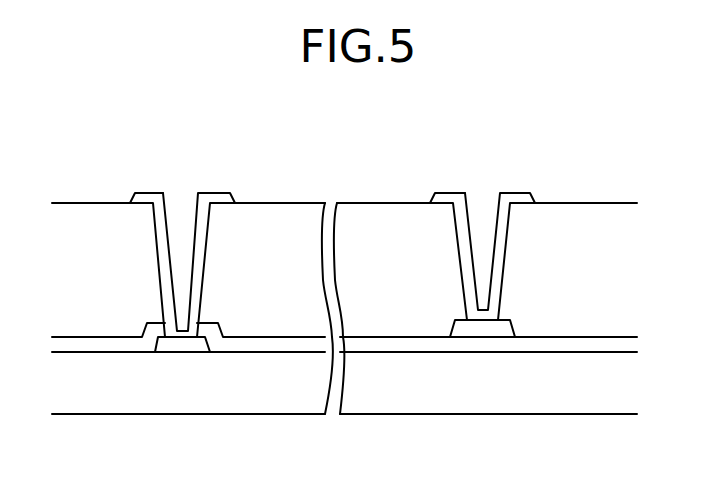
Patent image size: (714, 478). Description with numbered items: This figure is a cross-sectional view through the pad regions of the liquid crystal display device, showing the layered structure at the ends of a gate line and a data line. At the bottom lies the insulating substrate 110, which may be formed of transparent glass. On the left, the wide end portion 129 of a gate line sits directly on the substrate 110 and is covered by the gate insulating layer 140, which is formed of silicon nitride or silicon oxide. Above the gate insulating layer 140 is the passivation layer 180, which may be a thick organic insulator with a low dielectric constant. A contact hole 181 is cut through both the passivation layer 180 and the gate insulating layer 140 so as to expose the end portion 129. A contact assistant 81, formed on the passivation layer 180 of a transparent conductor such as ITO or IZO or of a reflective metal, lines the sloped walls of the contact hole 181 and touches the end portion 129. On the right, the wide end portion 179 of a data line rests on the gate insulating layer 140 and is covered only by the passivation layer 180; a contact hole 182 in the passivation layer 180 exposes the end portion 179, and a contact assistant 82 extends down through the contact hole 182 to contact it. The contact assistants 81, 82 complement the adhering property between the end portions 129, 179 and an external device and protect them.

The contact assistant 81 is at (148, 197).
The contact assistant 82 is at (445, 197).
The contact hole 181 is at (200, 238).
The contact hole 182 is at (502, 240).
The end portion of gate line 129 is at (187, 345).
The end portion of data line 179 is at (485, 330).
The gate insulating layer 140 is at (102, 345).
The passivation layer 180 is at (275, 278).
The insulating substrate 110 is at (548, 387).